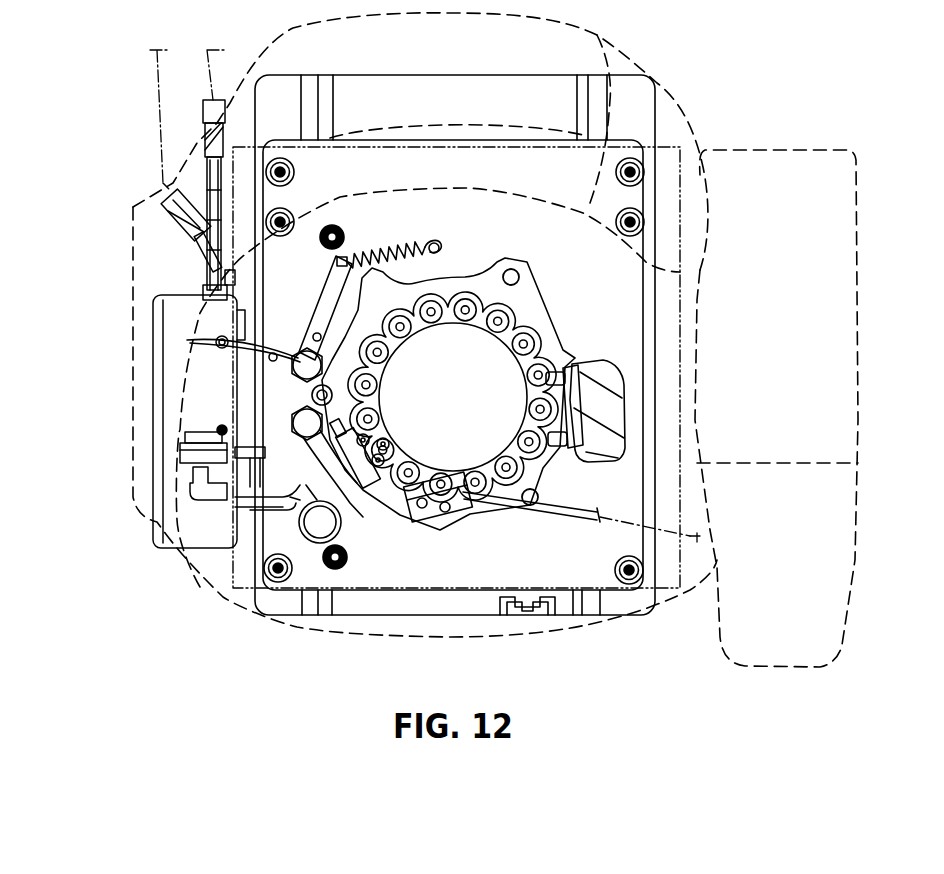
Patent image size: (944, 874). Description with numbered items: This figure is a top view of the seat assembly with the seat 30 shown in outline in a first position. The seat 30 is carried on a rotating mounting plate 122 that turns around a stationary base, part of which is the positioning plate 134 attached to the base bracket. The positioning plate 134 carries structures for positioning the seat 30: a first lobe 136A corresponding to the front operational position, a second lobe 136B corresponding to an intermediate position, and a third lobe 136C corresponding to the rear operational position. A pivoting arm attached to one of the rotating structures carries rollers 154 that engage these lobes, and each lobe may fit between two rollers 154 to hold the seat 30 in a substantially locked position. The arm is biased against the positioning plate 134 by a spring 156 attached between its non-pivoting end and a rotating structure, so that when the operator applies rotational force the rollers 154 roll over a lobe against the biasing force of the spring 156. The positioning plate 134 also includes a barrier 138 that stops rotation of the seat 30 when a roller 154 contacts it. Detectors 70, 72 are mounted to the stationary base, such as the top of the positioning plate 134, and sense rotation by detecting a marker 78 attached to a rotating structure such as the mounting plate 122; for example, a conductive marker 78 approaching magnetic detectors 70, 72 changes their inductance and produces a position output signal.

The seat 30 is at (643, 47).
The mounting plate 122 is at (440, 577).
The positioning plate 134 is at (563, 335).
The detector 70 is at (380, 417).
The detector 72 is at (463, 492).
The marker 78 is at (575, 350).
The first lobe 136A is at (190, 343).
The second lobe 136B is at (546, 494).
The third lobe 136C is at (520, 277).
The barrier 138 is at (381, 236).
The roller 154 is at (327, 300).
The spring 156 is at (423, 243).